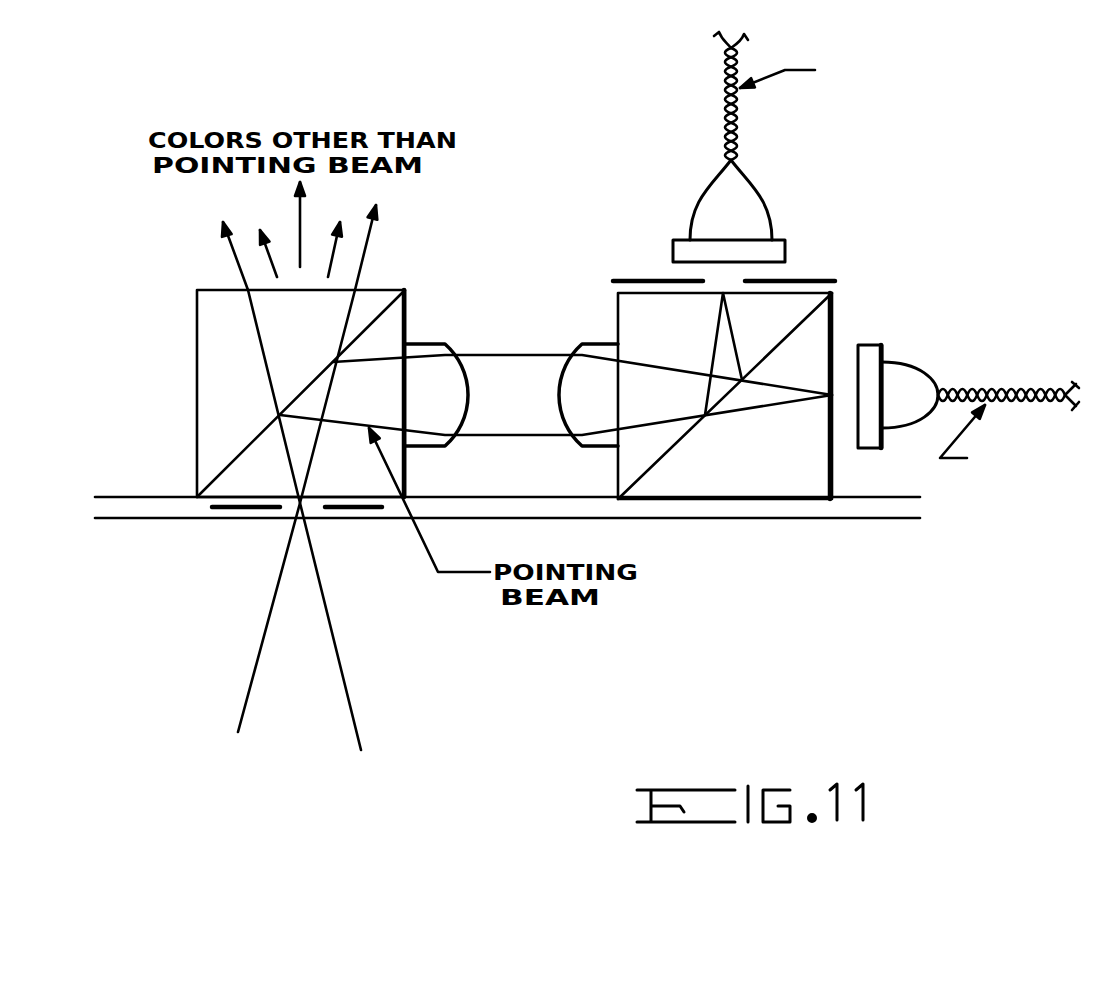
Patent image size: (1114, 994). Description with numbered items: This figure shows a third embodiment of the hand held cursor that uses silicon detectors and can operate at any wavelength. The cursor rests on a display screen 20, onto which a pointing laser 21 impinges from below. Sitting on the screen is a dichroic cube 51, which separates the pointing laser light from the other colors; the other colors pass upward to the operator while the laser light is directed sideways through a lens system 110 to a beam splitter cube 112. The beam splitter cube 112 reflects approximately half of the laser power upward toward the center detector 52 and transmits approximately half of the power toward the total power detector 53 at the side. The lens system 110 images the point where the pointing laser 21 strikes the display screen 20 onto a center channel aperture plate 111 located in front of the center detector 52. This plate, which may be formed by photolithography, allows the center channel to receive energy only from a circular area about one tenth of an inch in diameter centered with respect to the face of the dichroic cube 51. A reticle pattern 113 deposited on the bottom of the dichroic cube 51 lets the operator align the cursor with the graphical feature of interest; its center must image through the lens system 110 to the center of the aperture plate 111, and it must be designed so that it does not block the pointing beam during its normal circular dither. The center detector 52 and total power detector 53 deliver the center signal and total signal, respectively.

The display screen 20 is at (112, 505).
The pointing laser 21 is at (280, 672).
The dichroic cube 51 is at (197, 330).
The silicon detector 52 is at (785, 252).
The total power detector 53 is at (875, 345).
The lens system 110 is at (577, 457).
The center channel aperture plate 111 is at (838, 272).
The beam splitter cube 112 is at (807, 502).
The reticle pattern 113 is at (293, 508).